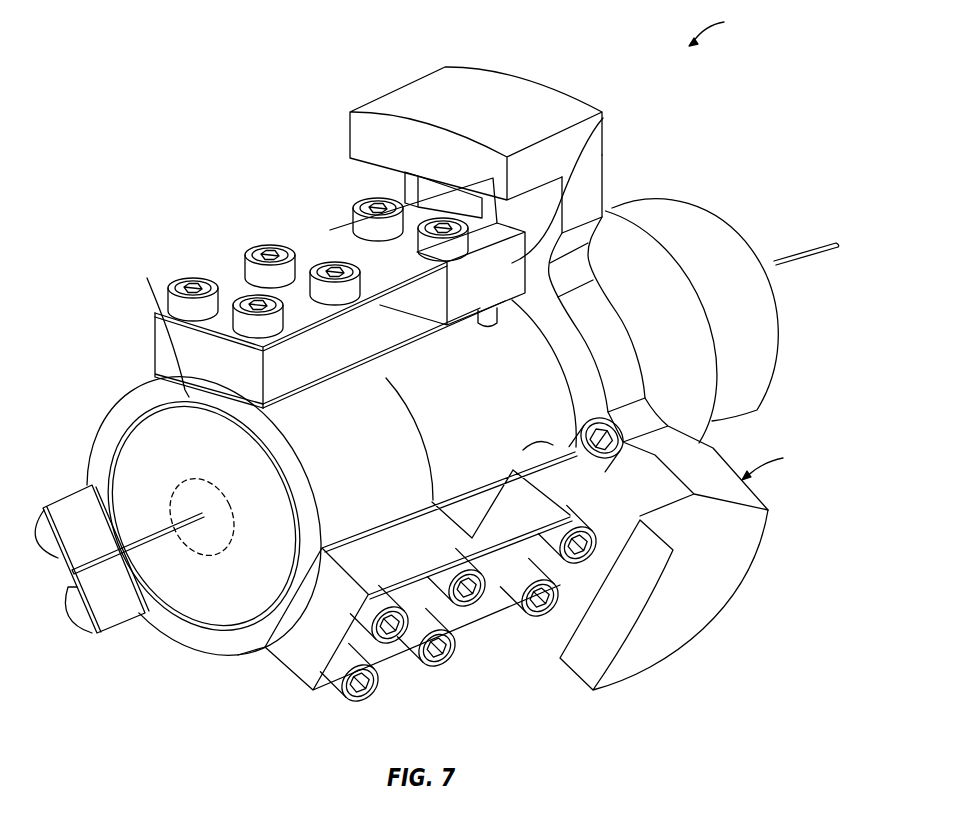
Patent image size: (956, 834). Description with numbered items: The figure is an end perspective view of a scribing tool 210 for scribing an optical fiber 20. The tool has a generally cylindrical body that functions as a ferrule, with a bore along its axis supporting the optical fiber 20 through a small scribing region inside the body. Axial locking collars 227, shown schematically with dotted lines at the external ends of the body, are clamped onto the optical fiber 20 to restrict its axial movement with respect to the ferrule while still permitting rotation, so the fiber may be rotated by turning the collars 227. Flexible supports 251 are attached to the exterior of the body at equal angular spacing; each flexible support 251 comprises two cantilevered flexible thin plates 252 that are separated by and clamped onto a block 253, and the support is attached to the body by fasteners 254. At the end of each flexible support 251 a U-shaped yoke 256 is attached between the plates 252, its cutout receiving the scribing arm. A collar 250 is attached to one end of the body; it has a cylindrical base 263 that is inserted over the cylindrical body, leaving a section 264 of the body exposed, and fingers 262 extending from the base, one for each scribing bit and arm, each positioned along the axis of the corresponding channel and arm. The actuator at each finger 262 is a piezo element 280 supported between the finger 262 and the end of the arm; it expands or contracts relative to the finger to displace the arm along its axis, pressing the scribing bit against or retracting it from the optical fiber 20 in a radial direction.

The scribing tool 210 is at (730, 27).
The optical fiber 20 is at (810, 253).
The axial locking collar 227 is at (197, 552).
The collar 250 is at (717, 457).
The flexible support 251 is at (92, 237).
The flexible thin plate 252 is at (232, 290).
The block 253 is at (163, 352).
The fastener 254 is at (262, 248).
The U-shaped yoke 256 is at (600, 122).
The finger 262 is at (410, 95).
The cylindrical base 263 is at (625, 247).
The exposed section of body 264 is at (699, 199).
The piezo element 280 is at (430, 193).